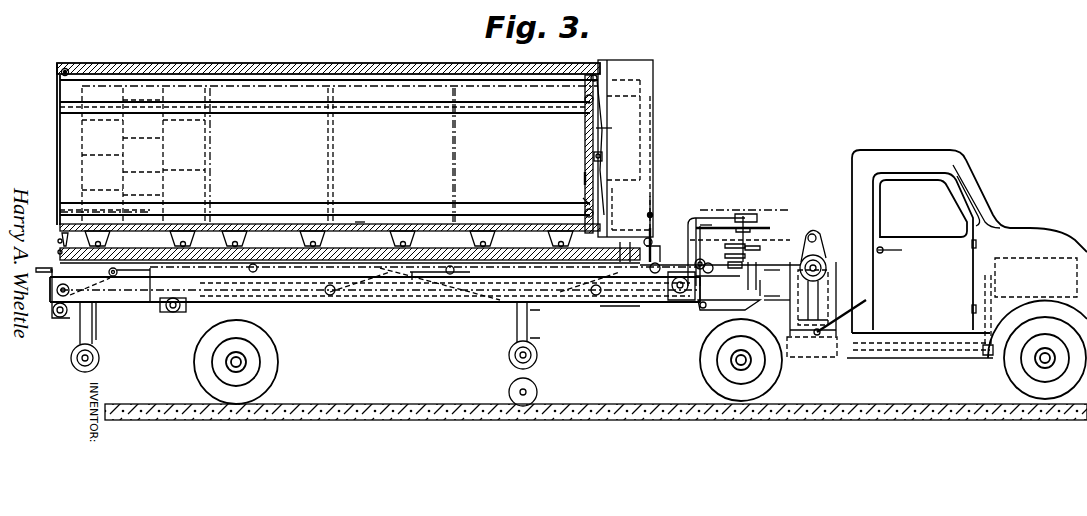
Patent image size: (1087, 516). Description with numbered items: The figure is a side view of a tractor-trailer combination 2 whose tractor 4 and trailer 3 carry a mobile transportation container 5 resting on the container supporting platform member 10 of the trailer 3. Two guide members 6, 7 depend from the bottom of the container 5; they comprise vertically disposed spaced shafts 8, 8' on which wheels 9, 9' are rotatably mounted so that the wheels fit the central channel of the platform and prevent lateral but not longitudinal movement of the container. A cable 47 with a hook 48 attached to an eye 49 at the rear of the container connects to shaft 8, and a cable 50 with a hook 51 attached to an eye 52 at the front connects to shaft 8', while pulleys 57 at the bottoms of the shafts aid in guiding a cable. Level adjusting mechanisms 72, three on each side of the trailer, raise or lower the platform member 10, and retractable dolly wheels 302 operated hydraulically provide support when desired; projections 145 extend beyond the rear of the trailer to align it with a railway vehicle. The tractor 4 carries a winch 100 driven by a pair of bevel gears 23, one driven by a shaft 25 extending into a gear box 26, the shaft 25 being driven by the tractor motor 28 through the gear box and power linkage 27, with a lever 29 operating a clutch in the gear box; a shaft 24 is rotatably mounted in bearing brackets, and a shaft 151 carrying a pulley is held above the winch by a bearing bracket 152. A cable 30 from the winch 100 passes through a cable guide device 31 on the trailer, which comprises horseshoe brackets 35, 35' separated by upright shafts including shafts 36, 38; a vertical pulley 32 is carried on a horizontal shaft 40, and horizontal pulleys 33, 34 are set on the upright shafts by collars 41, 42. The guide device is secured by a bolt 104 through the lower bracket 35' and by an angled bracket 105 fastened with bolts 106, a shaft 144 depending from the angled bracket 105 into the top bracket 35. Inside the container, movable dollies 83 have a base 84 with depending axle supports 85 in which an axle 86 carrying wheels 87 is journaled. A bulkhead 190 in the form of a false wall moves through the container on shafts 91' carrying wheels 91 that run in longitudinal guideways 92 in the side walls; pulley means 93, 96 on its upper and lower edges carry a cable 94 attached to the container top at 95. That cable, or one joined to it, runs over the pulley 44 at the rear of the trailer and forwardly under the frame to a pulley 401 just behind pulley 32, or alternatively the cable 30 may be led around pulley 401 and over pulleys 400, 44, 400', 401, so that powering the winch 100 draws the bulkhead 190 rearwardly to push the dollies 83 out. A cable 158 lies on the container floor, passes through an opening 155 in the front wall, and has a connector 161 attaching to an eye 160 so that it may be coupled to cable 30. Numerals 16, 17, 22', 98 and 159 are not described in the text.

The tractor-trailer combination 2 is at (933, 97).
The trailer 3 is at (625, 312).
The tractor 4 is at (53, 203).
The mobile transportation container 5 is at (653, 64).
The guide member 6 is at (50, 274).
The guide member 7 is at (43, 270).
The shaft 8 is at (287, 290).
The shaft 8' is at (440, 284).
The wheel 9 is at (244, 264).
The wheel 9' is at (438, 266).
The container supporting platform member 10 is at (395, 298).
The bracket 16 is at (770, 286).
The bracket 17 is at (772, 296).
The lock member 22' is at (746, 262).
The bevel gears 23 is at (768, 302).
The shaft 24 is at (820, 268).
The shaft 25 is at (790, 322).
The gear box 26 is at (820, 358).
The power linkage 27 is at (1003, 336).
The tractor motor 28 is at (1030, 268).
The lever 29 is at (853, 320).
The cable 30 is at (768, 256).
The cable guide device 31 is at (714, 212).
The pulley 32 is at (706, 282).
The pulley 33 is at (752, 232).
The pulley 34 is at (755, 256).
The horseshoe bracket 35 is at (754, 200).
The horseshoe bracket 35' is at (752, 286).
The upright shaft 36 is at (740, 214).
The upright shaft 38 is at (700, 222).
The shaft 40 is at (708, 274).
The collar 41 is at (730, 250).
The collar 42 is at (705, 262).
The pulley 44 is at (58, 314).
The cable 47 is at (162, 252).
The connector or hook 48 is at (58, 250).
The eye 49 is at (58, 240).
The cable 50 is at (646, 240).
The connector or hook 51 is at (650, 250).
The eye 52 is at (652, 244).
The pulleys 57 is at (465, 272).
The level adjusting mechanism 72 is at (95, 290).
The movable dollies 83 is at (172, 220).
The base or supporting member 84 is at (292, 225).
The axle supports 85 is at (360, 225).
The axle 86 is at (295, 250).
The wheels 87 is at (84, 244).
The wheel 91 is at (622, 149).
The shafts 91' is at (578, 147).
The longitudinal guideways 92 is at (75, 106).
The pulley means 93 is at (598, 68).
The cable 94 is at (430, 68).
The attachment point 95 is at (66, 70).
The pulley means 96 is at (598, 262).
The latch 98 is at (604, 158).
The winch 100 is at (822, 252).
The bolt 104 is at (755, 278).
The angled bracket 105 is at (688, 225).
The bolts 106 is at (670, 286).
The shaft 144 is at (742, 215).
The projections 145 is at (108, 272).
The shaft 151 is at (810, 226).
The bearing bracket 152 is at (818, 232).
The opening 155 is at (652, 228).
The cable 158 is at (584, 176).
The link 159 is at (582, 197).
The eye 160 is at (650, 196).
The connector 161 is at (652, 212).
The bulkhead 190 is at (612, 130).
The retractable dolly wheels 302 is at (100, 357).
The pulley 400 is at (63, 337).
The pulley 400' is at (168, 325).
The pulley 401 is at (700, 306).